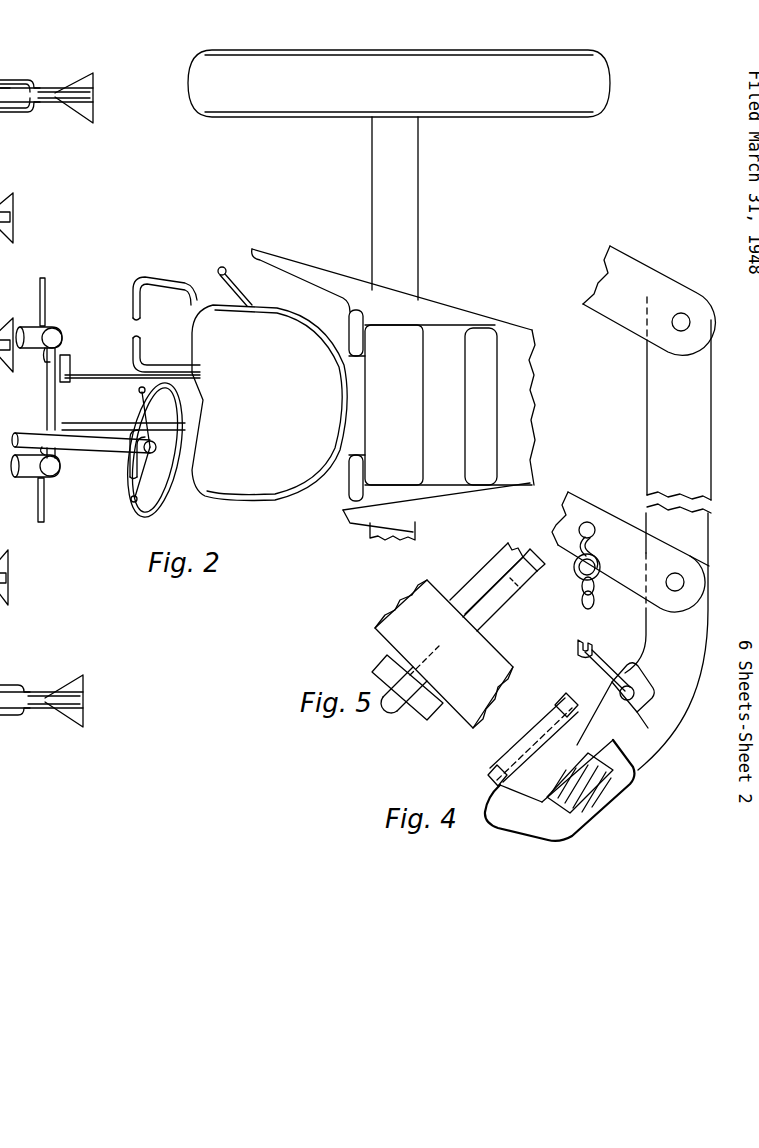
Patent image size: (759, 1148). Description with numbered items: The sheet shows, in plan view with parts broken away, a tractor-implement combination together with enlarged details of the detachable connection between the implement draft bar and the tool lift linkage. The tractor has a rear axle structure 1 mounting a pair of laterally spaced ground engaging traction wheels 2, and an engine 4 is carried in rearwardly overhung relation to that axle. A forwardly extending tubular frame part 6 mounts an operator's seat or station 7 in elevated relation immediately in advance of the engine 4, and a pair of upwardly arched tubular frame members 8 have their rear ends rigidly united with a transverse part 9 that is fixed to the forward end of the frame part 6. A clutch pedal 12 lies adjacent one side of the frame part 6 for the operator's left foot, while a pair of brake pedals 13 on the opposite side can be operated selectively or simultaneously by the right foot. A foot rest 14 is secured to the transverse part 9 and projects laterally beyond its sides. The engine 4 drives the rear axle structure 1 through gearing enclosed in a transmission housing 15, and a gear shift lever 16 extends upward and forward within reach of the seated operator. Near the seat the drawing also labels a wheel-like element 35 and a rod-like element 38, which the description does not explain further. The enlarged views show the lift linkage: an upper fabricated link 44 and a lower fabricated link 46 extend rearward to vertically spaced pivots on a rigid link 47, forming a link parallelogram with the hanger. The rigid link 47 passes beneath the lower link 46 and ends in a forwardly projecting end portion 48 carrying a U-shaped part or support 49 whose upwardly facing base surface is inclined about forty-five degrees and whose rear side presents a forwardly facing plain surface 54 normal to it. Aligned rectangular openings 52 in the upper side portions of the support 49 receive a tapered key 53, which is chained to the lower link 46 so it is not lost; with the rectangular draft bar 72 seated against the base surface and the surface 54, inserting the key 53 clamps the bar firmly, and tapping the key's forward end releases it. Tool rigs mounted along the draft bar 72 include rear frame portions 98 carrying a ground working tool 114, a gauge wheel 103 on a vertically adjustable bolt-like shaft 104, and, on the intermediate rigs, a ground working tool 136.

In FIG. 2, the rear axle structure 1 is at (372, 194).
In FIG. 2, the ground engaging traction wheels 2 is at (278, 117).
In FIG. 2, the engine 4 is at (512, 332).
In FIG. 2, the tubular frame part 6 is at (98, 378).
In FIG. 2, the operator's seat or station 7 is at (266, 381).
In FIG. 2, the tubular frame members 8 is at (56, 328).
In FIG. 2, the transverse part 9 is at (47, 398).
In FIG. 2, the clutch pedal 12 is at (130, 470).
In FIG. 2, the brake pedals 13 is at (133, 320).
In FIG. 2, the foot rest 14 is at (45, 292).
In FIG. 2, the transmission housing 15 is at (344, 355).
In FIG. 2, the gear shift lever 16 is at (224, 267).
In FIG. 2, the wheel 35 is at (142, 510).
In FIG. 2, the axle rod 38 is at (83, 450).
In FIG. 4, the upper link 44 is at (630, 318).
In FIG. 4, the lower link 46 is at (596, 508).
In FIG. 4, the rigid link 47 is at (647, 396).
In FIG. 4, the forwardly projecting end portion 48 is at (645, 751).
In FIG. 5, the forwardly projecting end portion 48 is at (492, 563).
In FIG. 4, the U-shaped part or support 49 is at (495, 782).
In FIG. 5, the U-shaped part or support 49 is at (390, 660).
In FIG. 4, the rectangular openings 52 is at (540, 805).
In FIG. 4, the tapered key 53 is at (543, 753).
In FIG. 5, the tapered key 53 is at (512, 595).
In FIG. 4, the forwardly facing plain surface 54 is at (557, 713).
In FIG. 4, the draft bar 72 is at (585, 789).
In FIG. 5, the draft bar 72 is at (408, 603).
In FIG. 2, the rear frame portions 98 is at (46, 103).
In FIG. 2, the gauge wheel 103 is at (10, 84).
In FIG. 2, the bolt-like spindle or shaft 104 is at (9, 129).
In FIG. 2, the ground working tool 114 is at (93, 82).
In FIG. 2, the ground working tool 136 is at (13, 199).